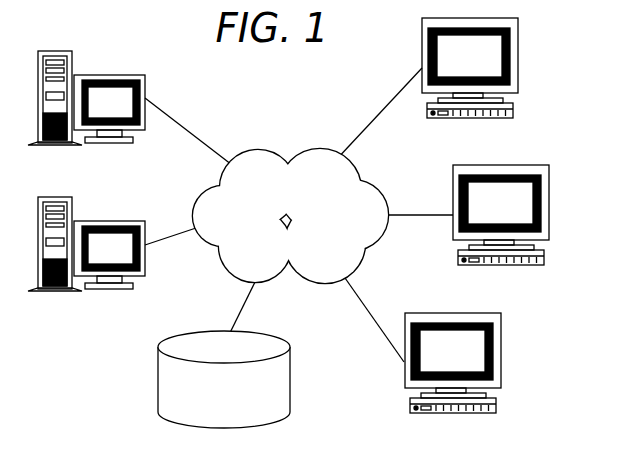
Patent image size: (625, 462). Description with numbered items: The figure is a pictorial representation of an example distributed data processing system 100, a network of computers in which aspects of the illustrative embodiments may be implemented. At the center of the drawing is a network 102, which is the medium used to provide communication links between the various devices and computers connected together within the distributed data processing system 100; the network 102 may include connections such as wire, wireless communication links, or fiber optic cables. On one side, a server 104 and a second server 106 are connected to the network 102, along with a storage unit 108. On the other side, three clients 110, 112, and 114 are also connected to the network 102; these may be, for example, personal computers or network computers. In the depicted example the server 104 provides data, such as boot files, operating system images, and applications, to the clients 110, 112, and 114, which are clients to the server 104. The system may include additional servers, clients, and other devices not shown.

The distributed data processing system 100 is at (116, 361).
The network 102 is at (258, 150).
The server 104 is at (108, 75).
The server 106 is at (108, 221).
The storage unit 108 is at (290, 368).
The client 110 is at (518, 60).
The client 112 is at (552, 207).
The client 114 is at (503, 353).